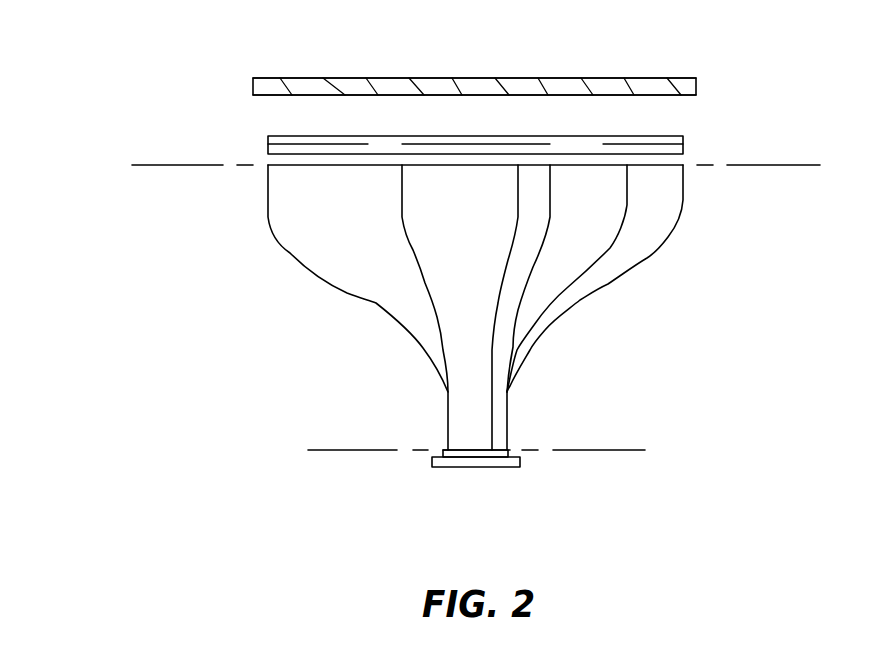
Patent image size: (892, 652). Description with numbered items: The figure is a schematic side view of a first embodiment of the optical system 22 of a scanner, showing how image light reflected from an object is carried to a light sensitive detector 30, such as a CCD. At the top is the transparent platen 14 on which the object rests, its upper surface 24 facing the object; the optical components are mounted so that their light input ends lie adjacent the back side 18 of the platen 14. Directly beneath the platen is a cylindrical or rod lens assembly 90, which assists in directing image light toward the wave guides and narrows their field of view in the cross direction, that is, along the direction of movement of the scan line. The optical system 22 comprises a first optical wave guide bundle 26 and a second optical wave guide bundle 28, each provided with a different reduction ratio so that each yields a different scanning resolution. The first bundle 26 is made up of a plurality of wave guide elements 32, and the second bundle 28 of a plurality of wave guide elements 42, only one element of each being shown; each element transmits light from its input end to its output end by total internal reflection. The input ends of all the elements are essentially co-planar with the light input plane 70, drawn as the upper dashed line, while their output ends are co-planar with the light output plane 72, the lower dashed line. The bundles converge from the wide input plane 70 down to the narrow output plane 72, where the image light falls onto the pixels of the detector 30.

The transparent platen 14 is at (307, 74).
The top surface of substrate 24 is at (600, 78).
The back side of the transparent platen 18 is at (687, 95).
The cylindrical lens assembly 90 is at (673, 137).
The light input plane 70 is at (162, 167).
The light output plane 72 is at (615, 450).
The optical system 22 is at (413, 307).
The first optical wave guide bundle 26 is at (285, 261).
The second optical wave guide bundle 28 is at (416, 289).
The wave guide element 42 is at (498, 303).
The wave guide element 32 is at (610, 248).
The detector 30 is at (444, 480).